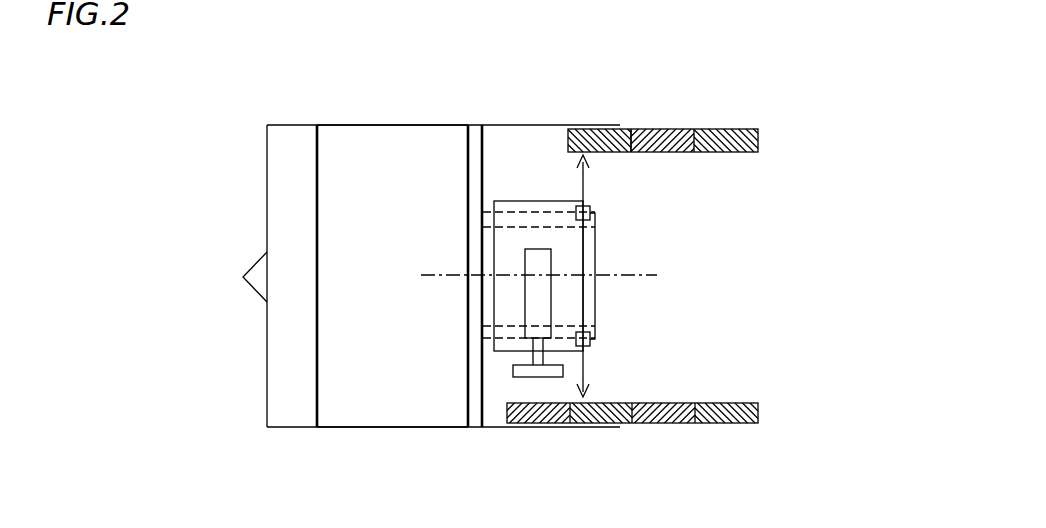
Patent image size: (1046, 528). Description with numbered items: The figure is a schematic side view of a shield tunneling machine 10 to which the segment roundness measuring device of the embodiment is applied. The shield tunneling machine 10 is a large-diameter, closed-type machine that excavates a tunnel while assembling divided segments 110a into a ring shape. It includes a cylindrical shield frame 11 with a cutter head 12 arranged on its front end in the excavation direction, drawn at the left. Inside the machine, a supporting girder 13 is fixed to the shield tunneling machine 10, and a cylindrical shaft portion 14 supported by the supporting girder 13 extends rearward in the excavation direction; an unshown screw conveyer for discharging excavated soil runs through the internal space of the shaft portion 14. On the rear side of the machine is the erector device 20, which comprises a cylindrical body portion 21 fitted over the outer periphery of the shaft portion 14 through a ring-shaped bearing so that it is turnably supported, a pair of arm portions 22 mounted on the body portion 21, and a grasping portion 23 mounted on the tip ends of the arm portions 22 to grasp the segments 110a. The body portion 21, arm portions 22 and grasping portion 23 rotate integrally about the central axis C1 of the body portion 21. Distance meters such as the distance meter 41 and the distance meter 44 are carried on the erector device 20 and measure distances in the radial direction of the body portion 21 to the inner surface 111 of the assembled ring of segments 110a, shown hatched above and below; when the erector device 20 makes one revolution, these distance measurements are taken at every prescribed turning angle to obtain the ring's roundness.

The shield tunneling machine 10 is at (500, 80).
The shield frame 11 is at (424, 125).
The cutter head 12 is at (297, 125).
The supporting girder 13 is at (468, 165).
The shaft portion 14 is at (597, 250).
The erector device 20 is at (494, 240).
The body portion 21 is at (525, 201).
The arm portions 22 is at (525, 304).
The grasping portion 23 is at (513, 372).
The distance meter 41 is at (595, 214).
The distance meter 44 is at (591, 339).
The central axis C1 is at (647, 278).
The segments 110a is at (602, 129).
The inner surface 111 is at (622, 152).